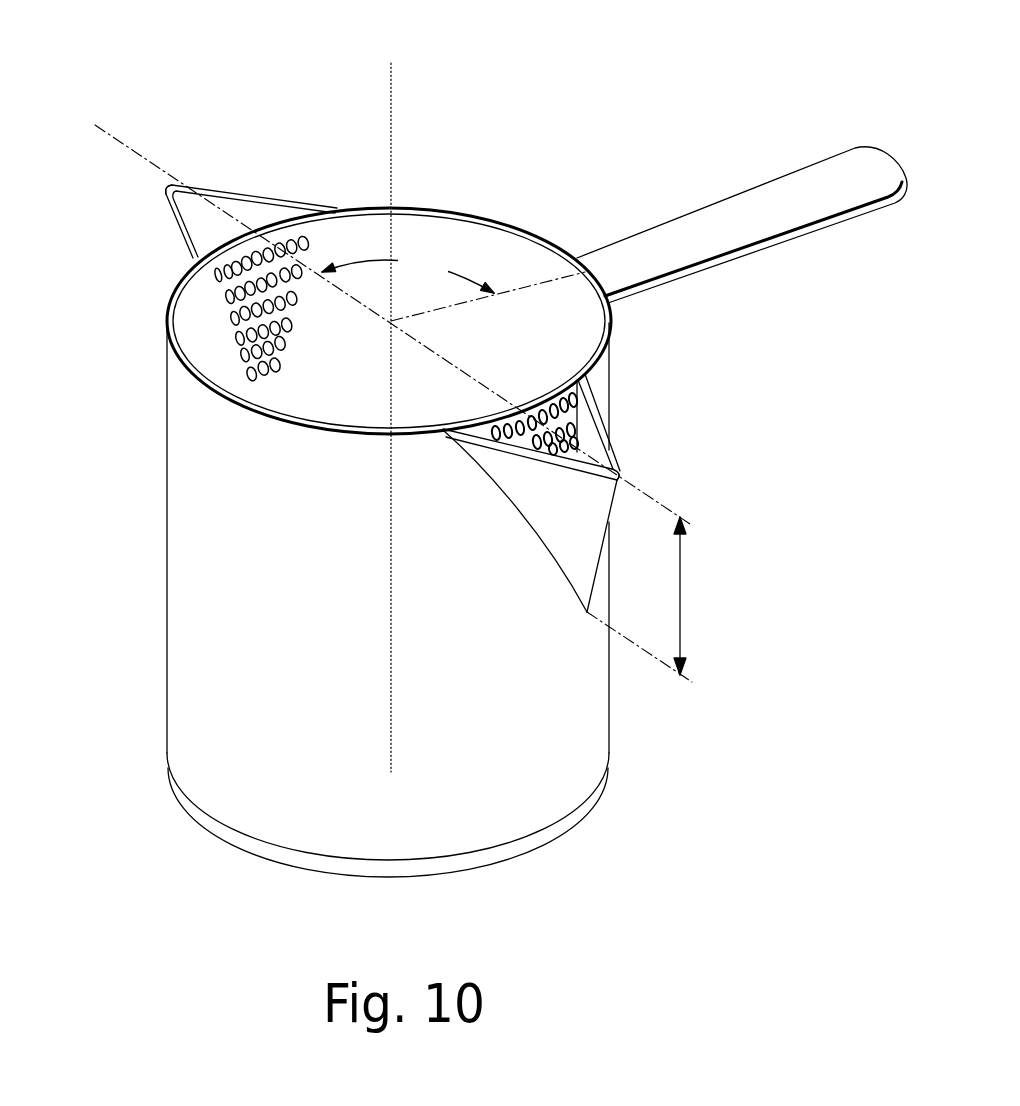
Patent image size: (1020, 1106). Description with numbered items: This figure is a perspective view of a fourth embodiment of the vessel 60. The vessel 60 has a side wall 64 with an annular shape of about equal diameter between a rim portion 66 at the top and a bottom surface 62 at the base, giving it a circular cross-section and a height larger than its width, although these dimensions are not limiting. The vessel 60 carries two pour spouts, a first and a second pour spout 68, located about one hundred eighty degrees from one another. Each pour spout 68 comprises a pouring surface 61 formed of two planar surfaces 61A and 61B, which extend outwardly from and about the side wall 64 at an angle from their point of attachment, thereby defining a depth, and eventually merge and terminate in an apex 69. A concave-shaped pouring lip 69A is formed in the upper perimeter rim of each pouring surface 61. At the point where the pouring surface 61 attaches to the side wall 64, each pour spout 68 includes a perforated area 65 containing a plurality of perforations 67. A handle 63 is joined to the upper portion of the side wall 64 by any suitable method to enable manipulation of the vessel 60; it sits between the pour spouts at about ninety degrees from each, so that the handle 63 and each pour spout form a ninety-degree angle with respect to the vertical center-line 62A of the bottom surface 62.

The vessel 60 is at (335, 83).
The pouring surface 61 is at (606, 441).
The planar surface 61A is at (608, 514).
The planar surface 61B is at (247, 209).
The bottom surface 62 is at (241, 848).
The vertical center-line 62A is at (393, 117).
The handle 63 is at (762, 202).
The side wall 64 is at (193, 535).
The perforated area 65 is at (578, 432).
The rim portion 66 is at (513, 222).
The perforations 67 is at (566, 402).
The pour spout 68 is at (588, 384).
The apex 69 is at (594, 594).
The pouring lip 69A is at (165, 186).